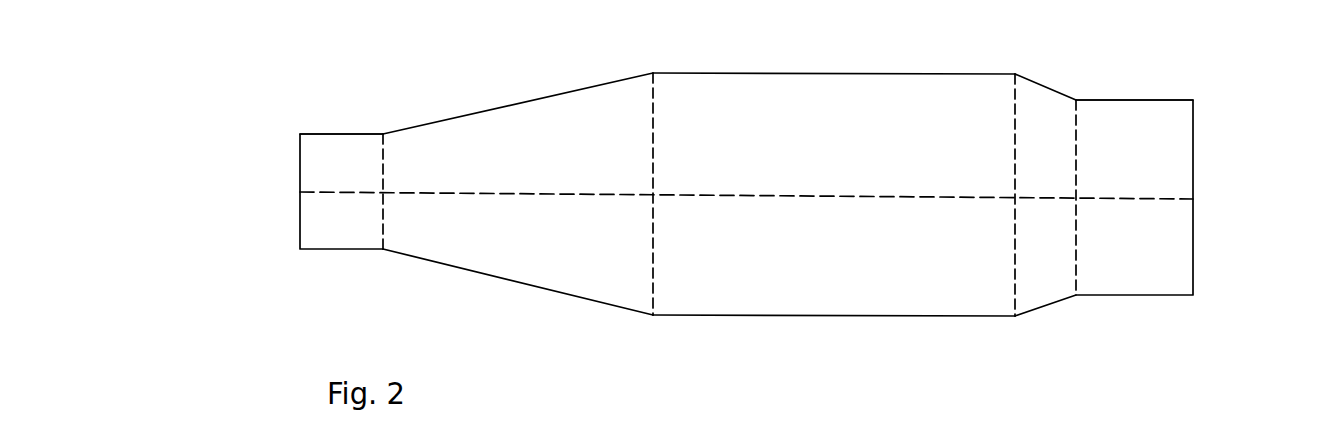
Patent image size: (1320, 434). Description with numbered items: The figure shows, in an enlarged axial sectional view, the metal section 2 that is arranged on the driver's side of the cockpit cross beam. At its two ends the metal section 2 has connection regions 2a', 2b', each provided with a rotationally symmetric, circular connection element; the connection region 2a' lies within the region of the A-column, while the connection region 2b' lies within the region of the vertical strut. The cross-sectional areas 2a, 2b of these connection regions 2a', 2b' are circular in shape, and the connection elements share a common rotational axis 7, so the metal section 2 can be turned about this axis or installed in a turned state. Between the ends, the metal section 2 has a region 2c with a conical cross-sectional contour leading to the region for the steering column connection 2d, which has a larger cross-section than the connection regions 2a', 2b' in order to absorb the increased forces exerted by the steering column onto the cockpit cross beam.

The metal section 2 is at (334, 296).
The cross-sectional area 2a is at (310, 191).
The connection region 2a' is at (341, 104).
The cross-sectional area 2b is at (1142, 195).
The connection region 2b' is at (1134, 71).
The region with conical cross-sectional contour 2c is at (513, 285).
The region for the steering column connection 2d is at (858, 285).
The rotational axis 7 is at (747, 197).